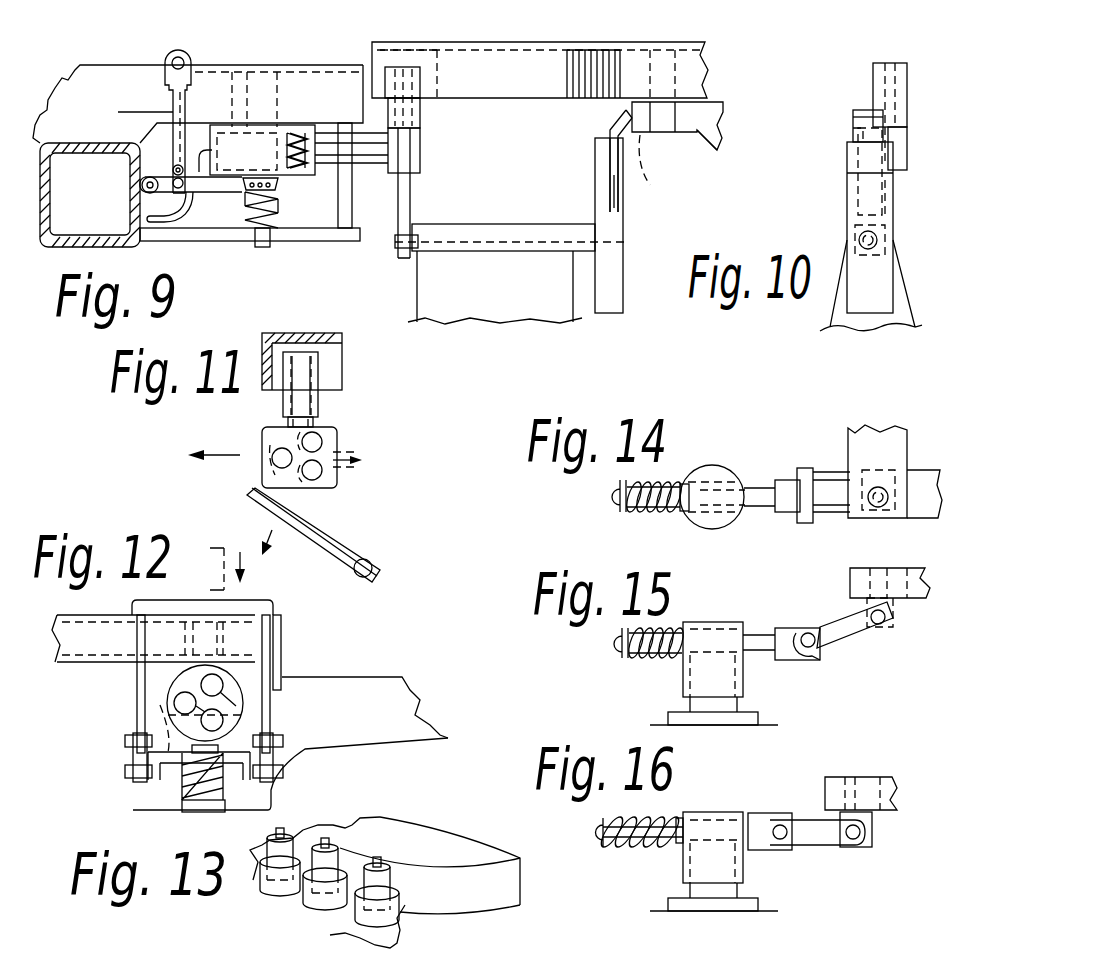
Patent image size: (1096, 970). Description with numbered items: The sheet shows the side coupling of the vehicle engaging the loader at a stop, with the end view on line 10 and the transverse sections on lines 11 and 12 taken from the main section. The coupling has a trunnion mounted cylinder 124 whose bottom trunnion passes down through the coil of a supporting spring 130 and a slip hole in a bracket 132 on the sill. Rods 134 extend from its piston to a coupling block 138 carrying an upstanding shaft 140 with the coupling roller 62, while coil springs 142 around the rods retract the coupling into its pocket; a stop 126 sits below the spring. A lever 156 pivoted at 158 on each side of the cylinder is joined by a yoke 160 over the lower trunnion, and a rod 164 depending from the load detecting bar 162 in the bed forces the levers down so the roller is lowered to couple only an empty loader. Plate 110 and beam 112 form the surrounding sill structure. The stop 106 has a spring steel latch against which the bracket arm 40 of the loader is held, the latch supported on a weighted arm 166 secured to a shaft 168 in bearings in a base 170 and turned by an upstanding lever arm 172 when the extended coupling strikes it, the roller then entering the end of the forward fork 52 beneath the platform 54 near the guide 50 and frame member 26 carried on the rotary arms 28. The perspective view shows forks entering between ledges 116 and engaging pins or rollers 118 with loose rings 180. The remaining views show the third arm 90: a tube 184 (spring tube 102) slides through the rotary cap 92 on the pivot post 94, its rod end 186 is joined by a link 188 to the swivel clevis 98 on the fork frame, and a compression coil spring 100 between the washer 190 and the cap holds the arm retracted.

In FIG. 9, the end view line 10— 10 is at (584, 22).
In FIG. 9, the section line 11— 11 is at (418, 22).
In FIG. 9, the section line 12— 12 is at (305, 20).
In FIG. 9, the rotary fork frame 26 is at (708, 70).
In FIG. 14, the rotary fork frame 26 is at (898, 428).
In FIG. 15, the rotary fork frame 26 is at (932, 582).
In FIG. 16, the rotary fork frame 26 is at (872, 777).
In FIG. 9, the rotary arms 28 is at (728, 118).
In FIG. 9, the bracket arm 40 is at (715, 146).
In FIG. 9, the guide 50 is at (663, 166).
In FIG. 11, the fork 52 is at (344, 354).
In FIG. 13, the fork 52 is at (423, 838).
In FIG. 9, the platform 54 is at (532, 84).
In FIG. 11, the platform 54 is at (262, 385).
In FIG. 13, the platform 54 is at (458, 905).
In FIG. 9, the coupling roller 62 is at (422, 115).
In FIG. 10, the coupling roller 62 is at (910, 93).
In FIG. 11, the coupling roller 62 is at (320, 368).
In FIG. 16, the third arm 90 is at (866, 850).
In FIG. 14, the rotary cap 92 is at (728, 472).
In FIG. 15, the rotary cap 92 is at (706, 623).
In FIG. 16, the rotary cap 92 is at (735, 810).
In FIG. 14, the pivot post 94 is at (712, 522).
In FIG. 15, the pivot post 94 is at (755, 705).
In FIG. 16, the pivot post 94 is at (755, 895).
In FIG. 14, the clevis or swivel 98 is at (905, 470).
In FIG. 15, the clevis or swivel 98 is at (895, 610).
In FIG. 16, the clevis or swivel 98 is at (875, 822).
In FIG. 14, the compression coil spring 100 is at (640, 512).
In FIG. 15, the compression coil spring 100 is at (645, 662).
In FIG. 16, the compression coil spring 100 is at (618, 850).
In FIG. 14, the tube 102 is at (765, 485).
In FIG. 15, the tube 102 is at (762, 630).
In FIG. 16, the tube 102 is at (632, 848).
In FIG. 9, the stop 106 is at (597, 178).
In FIG. 10, the stop 106 is at (893, 193).
In FIG. 12, the plate 110 is at (408, 675).
In FIG. 12, the beam 112 is at (78, 612).
In FIG. 13, the ledges 116 is at (405, 920).
In FIG. 13, the pins or rollers 118 is at (345, 835).
In FIG. 9, the trunnion mounted cylinder 124 is at (233, 125).
In FIG. 12, the trunnion mounted cylinder 124 is at (243, 700).
In FIG. 9, the stop 126 is at (258, 247).
In FIG. 9, the supporting spring 130 is at (282, 221).
In FIG. 12, the supporting spring 130 is at (177, 783).
In FIG. 9, the bracket 132 is at (188, 243).
In FIG. 12, the bracket 132 is at (255, 790).
In FIG. 9, the rods 134 is at (366, 150).
In FIG. 11, the rods 134 is at (372, 465).
In FIG. 12, the rods 134 is at (236, 718).
In FIG. 9, the coupling block 138 is at (422, 147).
In FIG. 10, the coupling block 138 is at (908, 143).
In FIG. 11, the coupling block 138 is at (340, 436).
In FIG. 9, the upstanding shaft 140 is at (430, 132).
In FIG. 10, the upstanding shaft 140 is at (898, 105).
In FIG. 11, the upstanding shaft 140 is at (322, 403).
In FIG. 9, the coil springs 142 is at (296, 172).
In FIG. 9, the lever 156 is at (148, 178).
In FIG. 12, the lever 156 is at (122, 760).
In FIG. 9, the pivot 158 is at (146, 210).
In FIG. 12, the yoke 160 is at (160, 712).
In FIG. 9, the load detecting bar 162 is at (176, 50).
In FIG. 12, the load detecting bar 162 is at (273, 607).
In FIG. 9, the rod / spring steel latch 164 is at (170, 113).
In FIG. 10, the rod / spring steel latch 164 is at (862, 110).
In FIG. 12, the rod / spring steel latch 164 is at (268, 648).
In FIG. 9, the arm 166 is at (598, 203).
In FIG. 10, the arm 166 is at (898, 214).
In FIG. 9, the shaft 168 is at (476, 244).
In FIG. 9, the base 170 is at (417, 300).
In FIG. 9, the upstanding lever arm 172 is at (399, 255).
In FIG. 10, the upstanding lever arm 172 is at (846, 135).
In FIG. 13, the loose rings 180 is at (350, 912).
In FIG. 14, the tube 184 is at (746, 500).
In FIG. 15, the tube 184 is at (750, 660).
In FIG. 16, the tube 184 is at (675, 815).
In FIG. 14, the rod end 186 is at (792, 510).
In FIG. 15, the rod end 186 is at (813, 657).
In FIG. 16, the rod end 186 is at (765, 813).
In FIG. 14, the link 188 is at (848, 520).
In FIG. 15, the link 188 is at (863, 640).
In FIG. 16, the link 188 is at (820, 846).
In FIG. 14, the washer or cap 190 is at (620, 507).
In FIG. 15, the washer or cap 190 is at (622, 656).
In FIG. 16, the washer or cap 190 is at (604, 846).